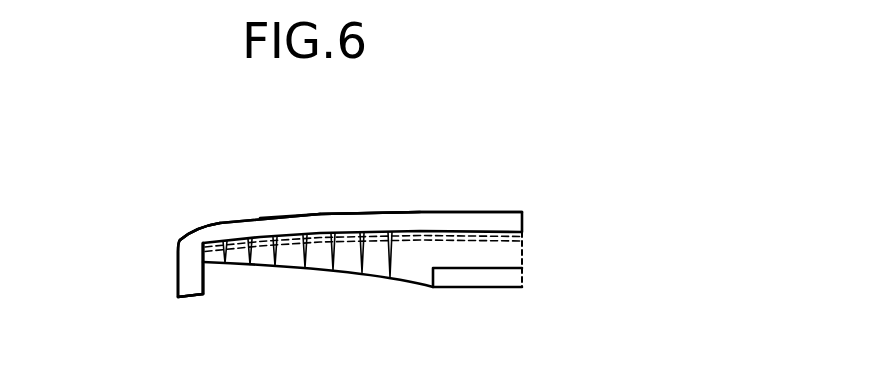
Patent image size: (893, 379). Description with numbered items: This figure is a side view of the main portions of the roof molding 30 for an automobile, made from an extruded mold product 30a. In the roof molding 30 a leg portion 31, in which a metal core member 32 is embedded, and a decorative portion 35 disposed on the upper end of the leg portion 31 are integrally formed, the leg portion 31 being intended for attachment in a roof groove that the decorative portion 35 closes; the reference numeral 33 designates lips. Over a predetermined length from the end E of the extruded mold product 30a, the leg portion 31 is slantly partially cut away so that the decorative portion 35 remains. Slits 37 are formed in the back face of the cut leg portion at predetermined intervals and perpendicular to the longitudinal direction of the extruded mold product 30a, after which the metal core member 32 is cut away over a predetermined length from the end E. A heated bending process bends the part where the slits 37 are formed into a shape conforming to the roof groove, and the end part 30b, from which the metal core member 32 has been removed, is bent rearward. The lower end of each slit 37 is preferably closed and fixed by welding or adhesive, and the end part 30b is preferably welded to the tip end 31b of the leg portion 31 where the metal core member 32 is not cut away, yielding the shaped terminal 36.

The roof molding 30 is at (507, 203).
The extruded mold product 30a is at (452, 212).
The end part 30b is at (178, 257).
The leg portion 31 is at (518, 262).
The tip end of the leg portion 31b is at (206, 268).
The metal core member 32 is at (526, 237).
The lips 33 is at (486, 281).
The decorative portion 35 is at (359, 213).
The terminal 36 is at (249, 221).
The slits 37 is at (246, 266).
The end of the extruded mold product E is at (190, 299).